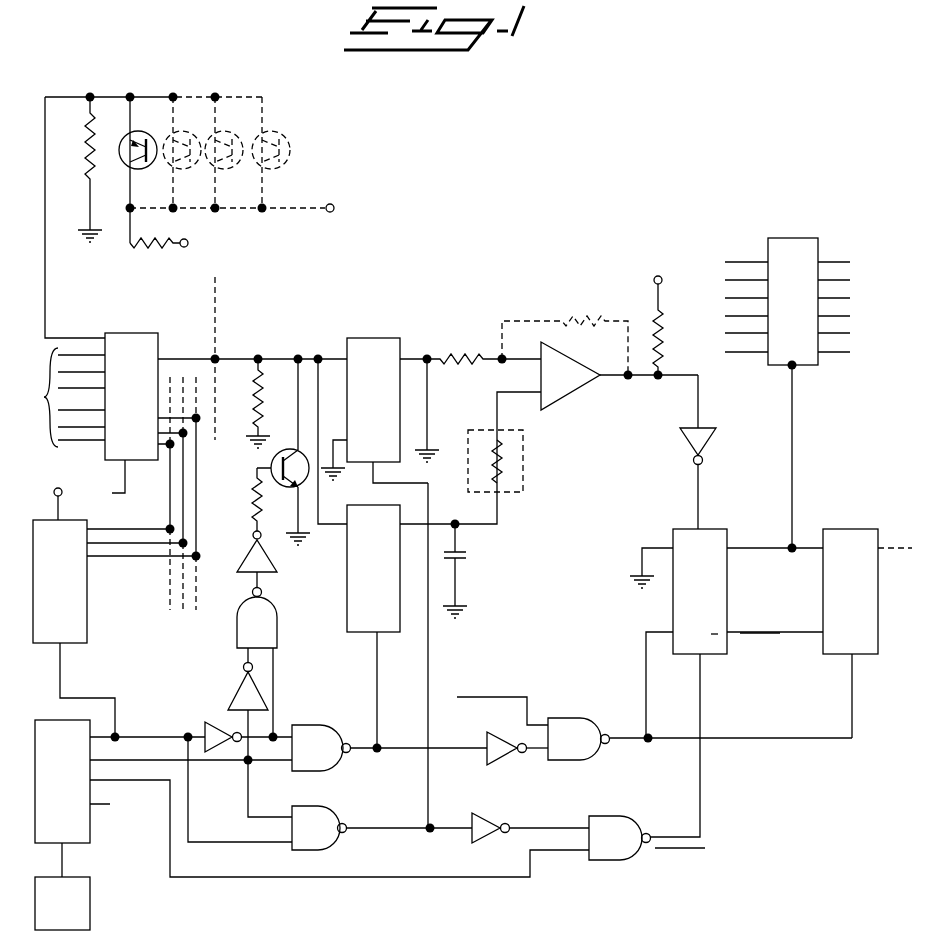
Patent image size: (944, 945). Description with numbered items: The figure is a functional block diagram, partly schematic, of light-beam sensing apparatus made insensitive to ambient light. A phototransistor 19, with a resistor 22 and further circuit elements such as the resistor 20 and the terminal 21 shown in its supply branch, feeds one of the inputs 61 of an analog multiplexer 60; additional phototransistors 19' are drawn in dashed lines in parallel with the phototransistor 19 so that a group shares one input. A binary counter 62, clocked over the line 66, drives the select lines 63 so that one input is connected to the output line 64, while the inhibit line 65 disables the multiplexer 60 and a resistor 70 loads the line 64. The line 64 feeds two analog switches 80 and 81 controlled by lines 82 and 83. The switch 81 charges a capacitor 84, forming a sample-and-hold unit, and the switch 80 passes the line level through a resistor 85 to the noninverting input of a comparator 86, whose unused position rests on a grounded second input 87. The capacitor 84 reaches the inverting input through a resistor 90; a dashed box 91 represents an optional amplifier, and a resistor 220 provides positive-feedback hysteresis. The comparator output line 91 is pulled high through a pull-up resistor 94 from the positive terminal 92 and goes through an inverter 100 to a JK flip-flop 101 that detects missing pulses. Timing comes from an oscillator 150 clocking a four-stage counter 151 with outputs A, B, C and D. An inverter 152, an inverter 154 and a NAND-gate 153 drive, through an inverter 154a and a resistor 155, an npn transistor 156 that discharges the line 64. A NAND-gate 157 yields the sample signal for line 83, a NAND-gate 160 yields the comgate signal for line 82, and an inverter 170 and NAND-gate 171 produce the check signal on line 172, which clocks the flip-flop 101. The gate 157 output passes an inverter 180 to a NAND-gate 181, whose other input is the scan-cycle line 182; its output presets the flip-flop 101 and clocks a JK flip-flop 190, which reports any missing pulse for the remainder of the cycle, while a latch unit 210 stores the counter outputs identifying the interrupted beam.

The phototransistor 19 is at (140, 152).
The additional phototransistors 19' is at (230, 141).
The resistor 20 is at (155, 250).
The supply terminal 21 is at (186, 250).
The load resistor 22 is at (88, 150).
The analog multiplexer 60 is at (128, 338).
The inputs 61 is at (57, 397).
The binary counter 62 is at (87, 600).
The select lines 63 is at (183, 478).
The output line 64 is at (238, 358).
The inhibit line 65 is at (101, 485).
The clock line 66 is at (58, 672).
The load resistor 70 is at (262, 405).
The analog switch 80 is at (383, 342).
The analog switch 81 is at (347, 598).
The control line 82 is at (430, 656).
The control line 83 is at (377, 680).
The capacitor 84 is at (460, 560).
The resistor 85 is at (468, 357).
The comparator 86 is at (568, 398).
The grounded second input 87 is at (333, 440).
The resistor 90 is at (503, 472).
The output line 91 is at (625, 380).
The positive voltage terminal 92 is at (662, 280).
The pull-up resistor 94 is at (663, 330).
The inverter 100 is at (676, 452).
The JK flip-flop 101 is at (676, 532).
The oscillator 150 is at (80, 905).
The four-stage binary counter 151 is at (90, 820).
The inverter 152 is at (208, 725).
The NAND-gate 153 is at (237, 640).
The inverter 154 is at (272, 563).
The inverter 154a is at (235, 680).
The resistor 155 is at (255, 505).
The npn transistor 156 is at (270, 472).
The NAND-gate 157 is at (345, 712).
The NAND-gate 160 is at (330, 812).
The inverter 170 is at (492, 810).
The NAND-gate 171 is at (620, 818).
The check signal line 172 is at (702, 803).
The inverter 180 is at (486, 745).
The NAND-gate 181 is at (586, 720).
The scan cycle line 182 is at (528, 695).
The JK flip-flop 190 is at (820, 602).
The latch unit 210 is at (793, 238).
The feedback resistor 220 is at (592, 318).